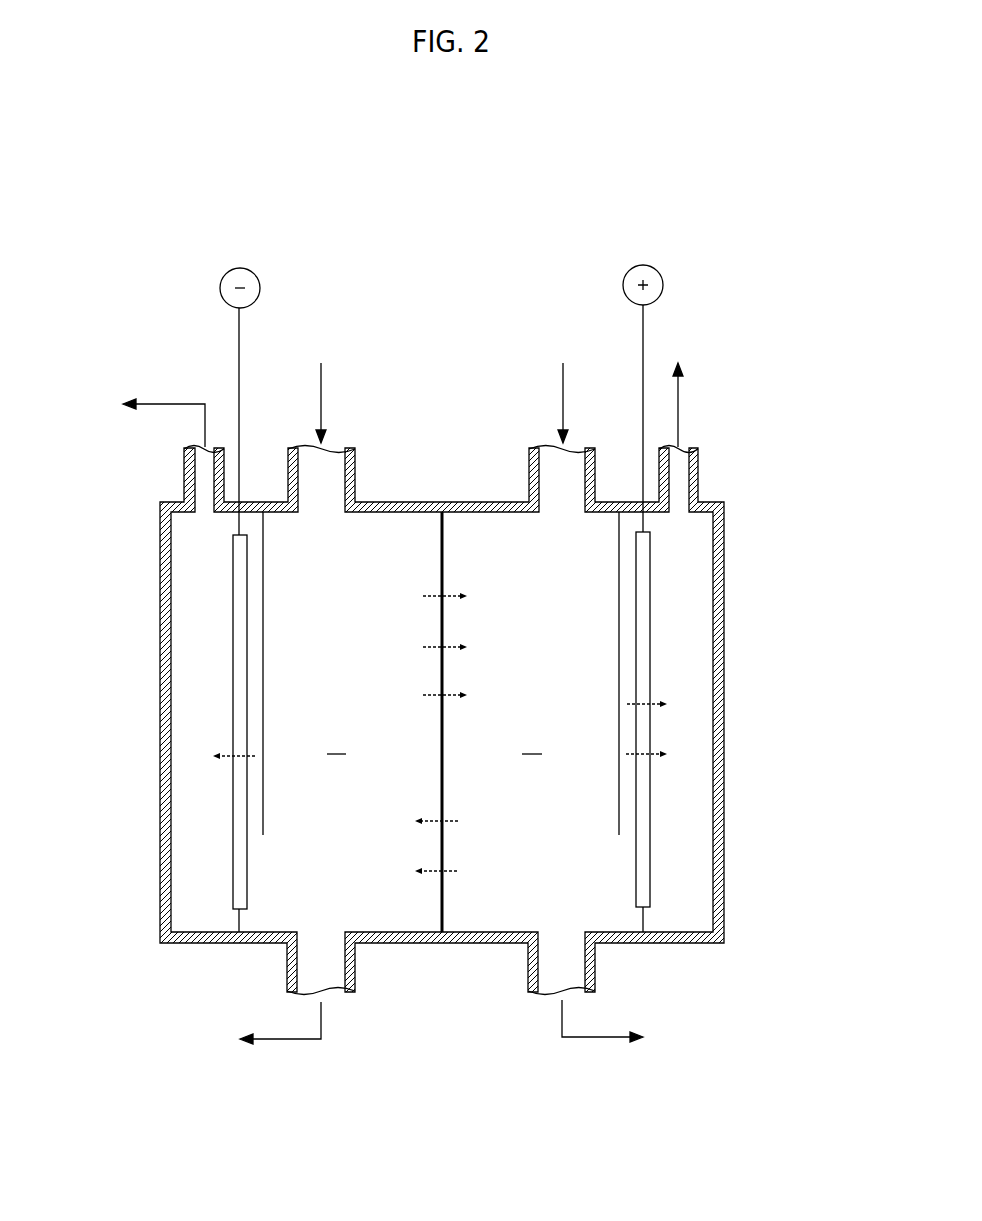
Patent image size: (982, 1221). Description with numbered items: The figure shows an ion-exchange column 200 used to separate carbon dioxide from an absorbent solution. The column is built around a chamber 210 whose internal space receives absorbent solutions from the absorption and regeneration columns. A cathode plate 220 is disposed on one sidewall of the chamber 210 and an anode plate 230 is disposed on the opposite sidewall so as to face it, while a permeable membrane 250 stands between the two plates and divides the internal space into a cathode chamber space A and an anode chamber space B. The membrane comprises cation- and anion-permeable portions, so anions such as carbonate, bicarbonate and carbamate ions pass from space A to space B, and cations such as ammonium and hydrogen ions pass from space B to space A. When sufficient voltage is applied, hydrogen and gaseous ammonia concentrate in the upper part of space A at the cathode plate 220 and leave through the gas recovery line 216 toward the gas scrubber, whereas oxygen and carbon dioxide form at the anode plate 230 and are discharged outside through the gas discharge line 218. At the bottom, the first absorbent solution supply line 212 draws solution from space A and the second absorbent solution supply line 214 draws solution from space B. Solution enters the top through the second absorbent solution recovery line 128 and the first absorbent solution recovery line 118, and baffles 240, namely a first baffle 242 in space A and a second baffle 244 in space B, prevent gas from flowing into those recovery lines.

The ion-exchange column 200 is at (135, 213).
The chamber 210 is at (724, 572).
The first absorbent solution supply line 212 is at (283, 1041).
The second absorbent solution supply line 214 is at (597, 1040).
The gas recovery line 216 is at (170, 404).
The gas discharge line 218 is at (680, 408).
The cathode plate 220 is at (233, 638).
The anode plate 230 is at (650, 635).
The baffles 240 is at (504, 447).
The first baffle 242 is at (264, 629).
The second baffle 244 is at (619, 629).
The permeable membrane 250 is at (447, 905).
The second absorbent solution recovery line 128 is at (324, 384).
The first absorbent solution recovery line 118 is at (562, 383).